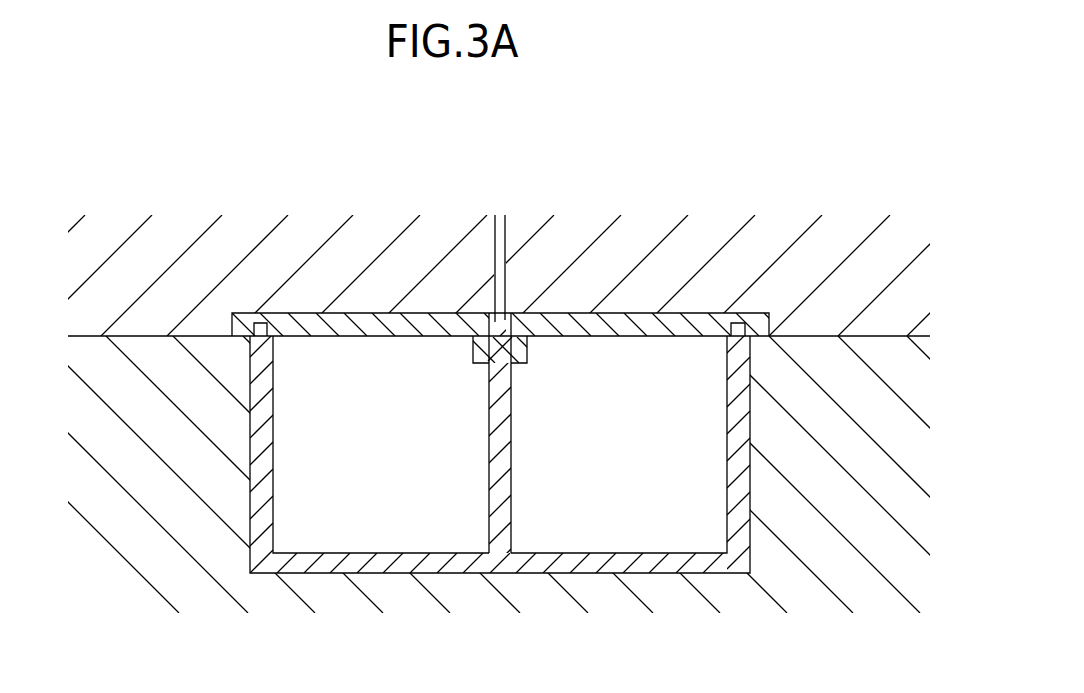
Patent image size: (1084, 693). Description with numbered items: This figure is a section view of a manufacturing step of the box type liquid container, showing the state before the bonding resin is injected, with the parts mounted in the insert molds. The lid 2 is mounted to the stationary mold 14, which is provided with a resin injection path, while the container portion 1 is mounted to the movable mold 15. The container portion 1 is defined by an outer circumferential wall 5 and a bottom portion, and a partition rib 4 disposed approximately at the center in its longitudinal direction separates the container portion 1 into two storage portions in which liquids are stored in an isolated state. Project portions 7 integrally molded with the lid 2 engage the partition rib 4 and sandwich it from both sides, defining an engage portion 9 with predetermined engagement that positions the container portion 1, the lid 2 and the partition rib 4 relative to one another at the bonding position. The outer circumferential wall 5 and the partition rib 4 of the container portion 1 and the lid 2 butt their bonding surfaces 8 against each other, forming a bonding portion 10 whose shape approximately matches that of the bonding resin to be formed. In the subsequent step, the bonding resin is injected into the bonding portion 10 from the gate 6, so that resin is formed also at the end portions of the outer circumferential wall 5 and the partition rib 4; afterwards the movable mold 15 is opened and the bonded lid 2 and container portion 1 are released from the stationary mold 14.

The container portion 1 is at (297, 572).
The lid 2 is at (769, 313).
The partition rib 4 is at (492, 514).
The outer circumferential wall 5 is at (252, 522).
The gate 6 is at (487, 316).
The project portion 7 is at (483, 363).
The bonding surface 8 is at (248, 313).
The engage portion 9 is at (475, 345).
The bonding portion 10 is at (258, 313).
The stationary mold 14 is at (97, 283).
The movable mold 15 is at (102, 572).